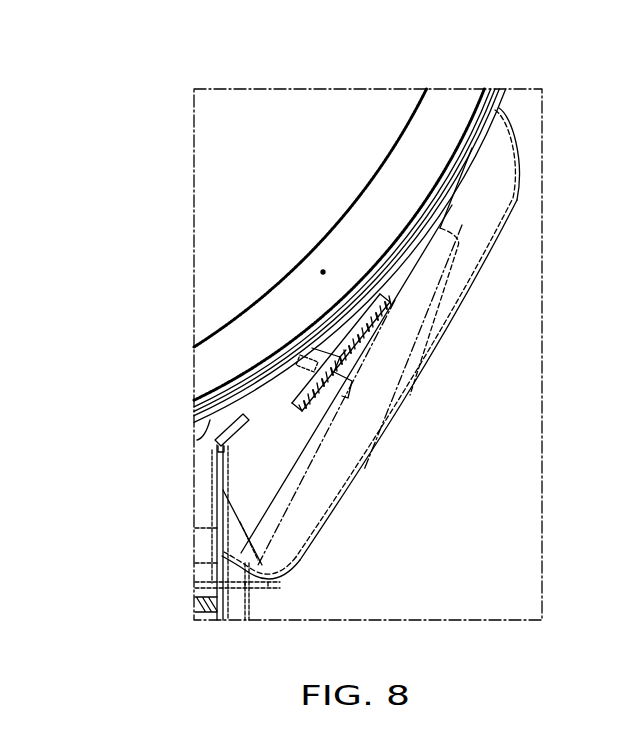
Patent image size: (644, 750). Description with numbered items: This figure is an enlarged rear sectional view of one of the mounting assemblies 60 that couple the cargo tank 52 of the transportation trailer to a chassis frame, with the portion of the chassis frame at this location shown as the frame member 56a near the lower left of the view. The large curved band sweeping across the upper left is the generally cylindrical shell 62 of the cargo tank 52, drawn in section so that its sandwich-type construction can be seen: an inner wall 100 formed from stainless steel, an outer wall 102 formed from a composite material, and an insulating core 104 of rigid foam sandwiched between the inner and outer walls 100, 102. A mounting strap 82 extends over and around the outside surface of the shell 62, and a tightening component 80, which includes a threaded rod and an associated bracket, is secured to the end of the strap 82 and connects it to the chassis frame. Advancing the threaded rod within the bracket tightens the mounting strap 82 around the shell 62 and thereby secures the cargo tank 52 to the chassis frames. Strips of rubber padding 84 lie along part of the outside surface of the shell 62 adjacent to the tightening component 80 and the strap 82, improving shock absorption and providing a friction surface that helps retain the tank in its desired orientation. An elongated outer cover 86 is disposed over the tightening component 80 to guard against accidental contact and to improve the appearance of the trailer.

The cargo tank 52 is at (269, 417).
The support bracket 56a is at (211, 516).
The mounting assembly 60 is at (416, 414).
The shell 62 is at (486, 146).
The tightening component 80 is at (329, 414).
The mounting strap 82 is at (505, 107).
The rubber padding 84 is at (400, 267).
The outer cover 86 is at (490, 198).
The inner wall 100 is at (342, 212).
The outer wall 102 is at (216, 428).
The insulating core 104 is at (222, 356).